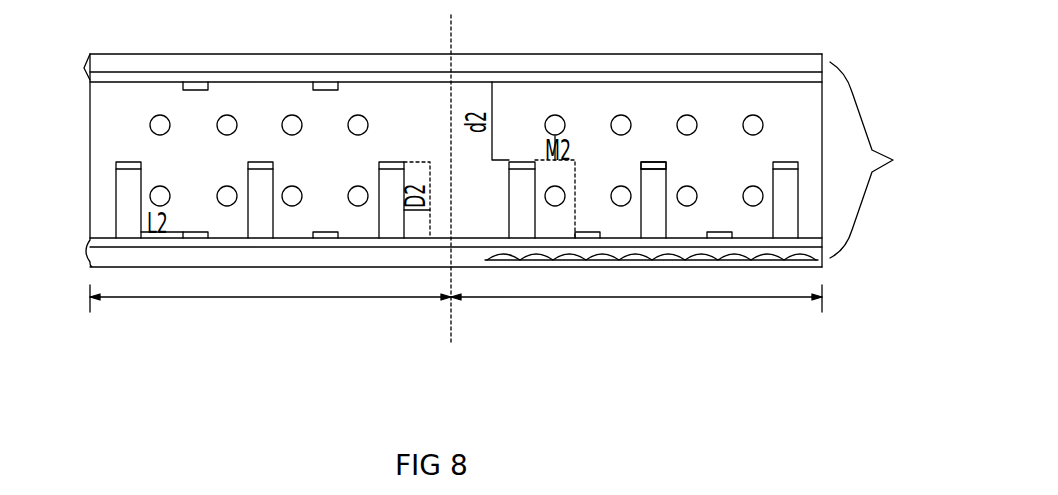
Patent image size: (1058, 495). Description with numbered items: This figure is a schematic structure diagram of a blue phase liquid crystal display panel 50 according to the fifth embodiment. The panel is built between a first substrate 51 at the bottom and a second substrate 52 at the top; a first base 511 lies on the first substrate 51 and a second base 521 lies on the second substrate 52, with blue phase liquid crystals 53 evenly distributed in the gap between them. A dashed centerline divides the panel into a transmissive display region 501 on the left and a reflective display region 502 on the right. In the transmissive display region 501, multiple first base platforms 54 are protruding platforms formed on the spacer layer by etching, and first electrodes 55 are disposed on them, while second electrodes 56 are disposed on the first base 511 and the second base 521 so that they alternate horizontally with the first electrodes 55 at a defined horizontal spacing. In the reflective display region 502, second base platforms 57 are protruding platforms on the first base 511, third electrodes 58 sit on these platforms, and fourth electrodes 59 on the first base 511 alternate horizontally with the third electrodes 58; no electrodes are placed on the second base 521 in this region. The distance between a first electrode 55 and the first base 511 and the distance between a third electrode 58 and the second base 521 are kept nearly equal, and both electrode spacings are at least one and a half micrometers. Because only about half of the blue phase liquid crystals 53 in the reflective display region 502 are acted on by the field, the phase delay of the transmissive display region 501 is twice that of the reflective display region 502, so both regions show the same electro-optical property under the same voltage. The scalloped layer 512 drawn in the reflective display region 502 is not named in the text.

The blue phase liquid crystal display panel 50 is at (893, 160).
The first substrate 51 is at (85, 252).
The first base 511 is at (100, 240).
The bumps 512 is at (497, 256).
The second substrate 52 is at (84, 68).
The second base 521 is at (100, 80).
The blue phase liquid crystals 53 is at (160, 125).
The first base platforms 54 is at (259, 222).
The first electrodes 55 is at (260, 165).
The second electrodes 56 is at (325, 233).
The second base platforms 57 is at (527, 208).
The third electrodes 58 is at (655, 166).
The fourth electrodes 59 is at (720, 236).
The transmissive display region 501 is at (270, 289).
The reflective display region 502 is at (636, 289).